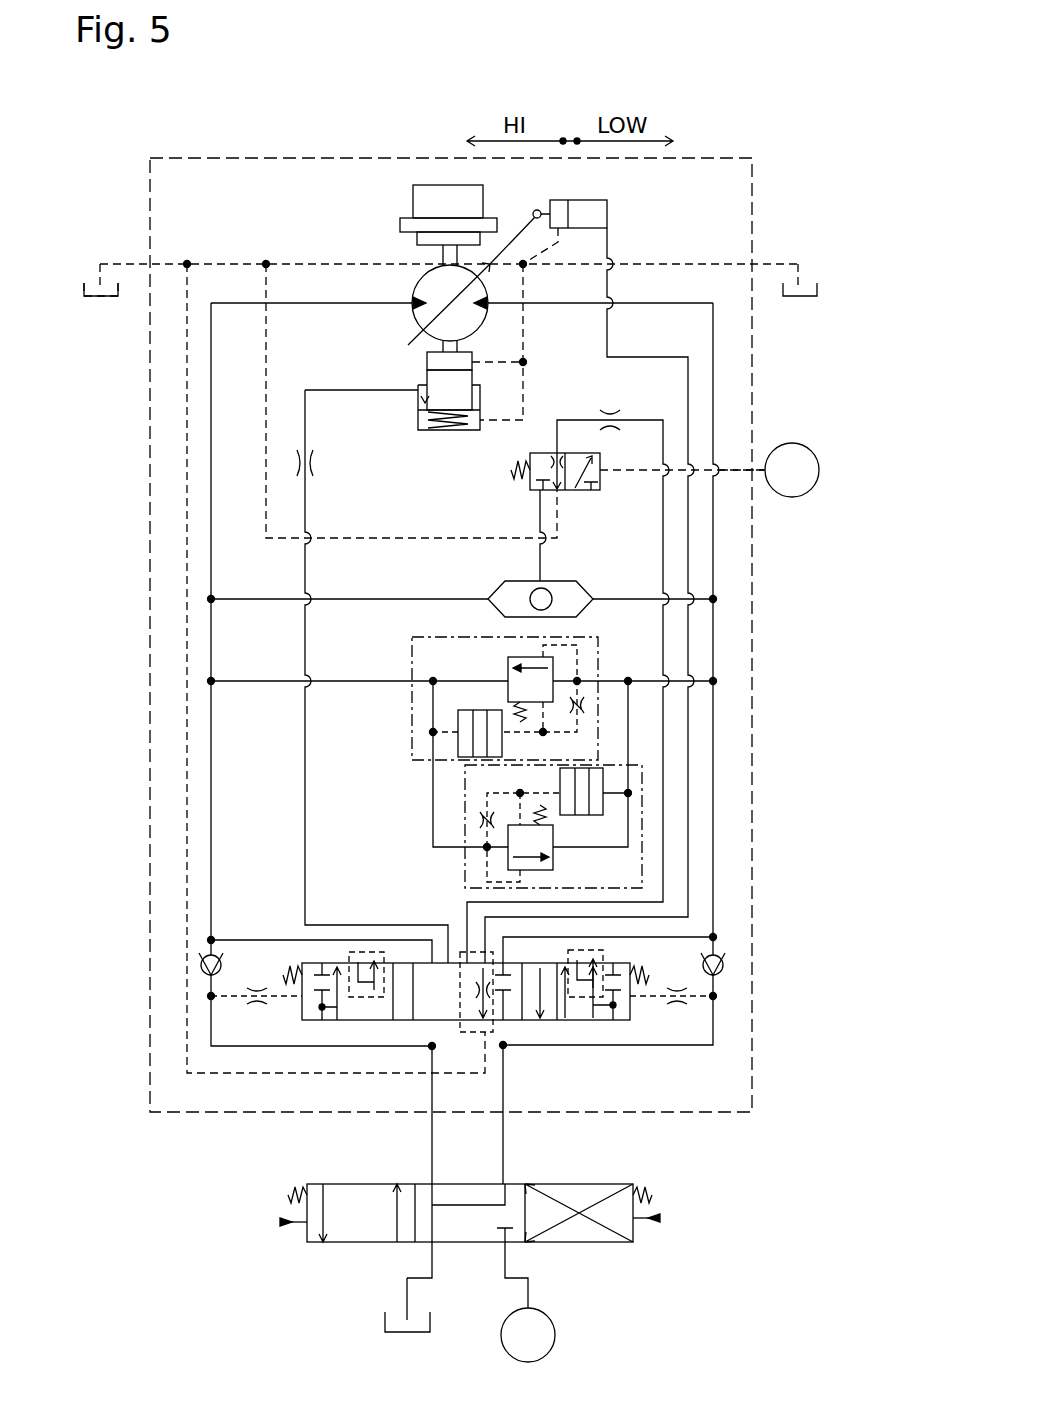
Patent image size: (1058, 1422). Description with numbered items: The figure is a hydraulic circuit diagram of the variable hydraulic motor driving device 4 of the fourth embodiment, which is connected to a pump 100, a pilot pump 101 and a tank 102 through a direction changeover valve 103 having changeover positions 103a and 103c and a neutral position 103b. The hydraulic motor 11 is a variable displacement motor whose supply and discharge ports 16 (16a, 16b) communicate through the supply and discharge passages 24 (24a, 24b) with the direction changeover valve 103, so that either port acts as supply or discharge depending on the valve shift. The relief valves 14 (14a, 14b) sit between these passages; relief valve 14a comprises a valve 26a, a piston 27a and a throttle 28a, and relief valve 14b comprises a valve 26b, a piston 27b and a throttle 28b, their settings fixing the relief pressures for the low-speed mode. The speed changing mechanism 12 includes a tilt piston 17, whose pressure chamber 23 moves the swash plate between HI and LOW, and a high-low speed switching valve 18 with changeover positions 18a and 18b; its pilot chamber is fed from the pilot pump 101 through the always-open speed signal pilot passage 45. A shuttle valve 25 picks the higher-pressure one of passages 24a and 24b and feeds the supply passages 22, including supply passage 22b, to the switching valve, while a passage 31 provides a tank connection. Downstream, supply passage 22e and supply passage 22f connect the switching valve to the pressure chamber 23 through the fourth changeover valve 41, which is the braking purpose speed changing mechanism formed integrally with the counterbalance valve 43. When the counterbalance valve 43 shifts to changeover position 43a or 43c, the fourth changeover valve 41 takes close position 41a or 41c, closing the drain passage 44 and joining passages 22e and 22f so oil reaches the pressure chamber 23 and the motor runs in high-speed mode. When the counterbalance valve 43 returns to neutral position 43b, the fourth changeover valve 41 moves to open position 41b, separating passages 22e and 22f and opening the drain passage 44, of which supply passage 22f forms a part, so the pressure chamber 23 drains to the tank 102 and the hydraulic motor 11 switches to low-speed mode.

The variable hydraulic motor driving device 4 is at (755, 153).
The hydraulic motor 11 is at (462, 275).
The speed changing mechanism 12 is at (581, 353).
The relief valves 14 is at (575, 764).
The relief valve 14a is at (480, 742).
The relief valve 14b is at (581, 830).
The supply and discharge ports 16 is at (462, 331).
The supply and discharge port 16a is at (410, 309).
The supply and discharge port 16b is at (492, 308).
The tilt piston 17 is at (614, 218).
The high-low speed switching valve 18 is at (581, 490).
The changeover position 18a is at (530, 465).
The changeover position 18b is at (671, 502).
The supply passages 22 is at (683, 595).
The supply passage 22b is at (545, 562).
The supply passage 22e is at (578, 418).
The supply passage 22f is at (640, 356).
The pressure chamber 23 is at (620, 214).
The supply and discharge passages 24 is at (485, 790).
The supply and discharge passage 24a is at (211, 780).
The supply and discharge passage 24b is at (713, 760).
The shuttle valve 25 is at (497, 590).
The valve 26a is at (508, 670).
The valve 26b is at (553, 863).
The piston 27a is at (458, 750).
The piston 27b is at (606, 783).
The throttle 28a is at (585, 703).
The throttle 28b is at (483, 822).
The passage 31 is at (356, 536).
The fourth changeover valve 41 is at (562, 1035).
The close position 41a is at (362, 1002).
The open position 41b is at (480, 1035).
The close position 41c is at (605, 953).
The counterbalance valve 43 is at (485, 1035).
The changeover position 43a is at (315, 962).
The neutral position 43b is at (417, 1025).
The changeover position 43c is at (582, 1022).
The drain passage 44 is at (187, 640).
The speed signal pilot passage 45 is at (740, 475).
The pump 100 is at (565, 1338).
The pilot pump 101 is at (808, 497).
The tank 102 is at (100, 306).
The direction changeover valve 103 is at (517, 1217).
The changeover position 103a is at (340, 1243).
The neutral position 103b is at (527, 1183).
The changeover position 103c is at (598, 1243).